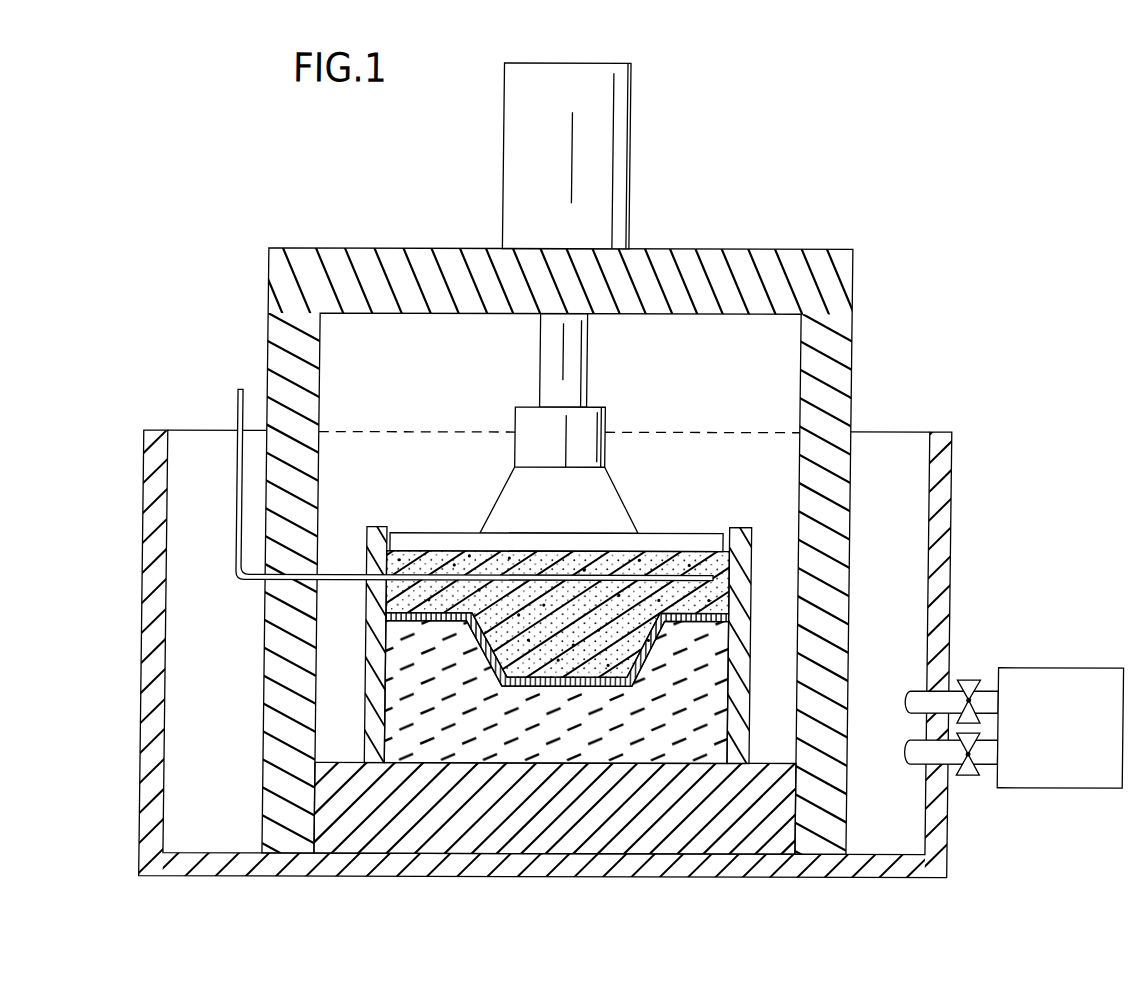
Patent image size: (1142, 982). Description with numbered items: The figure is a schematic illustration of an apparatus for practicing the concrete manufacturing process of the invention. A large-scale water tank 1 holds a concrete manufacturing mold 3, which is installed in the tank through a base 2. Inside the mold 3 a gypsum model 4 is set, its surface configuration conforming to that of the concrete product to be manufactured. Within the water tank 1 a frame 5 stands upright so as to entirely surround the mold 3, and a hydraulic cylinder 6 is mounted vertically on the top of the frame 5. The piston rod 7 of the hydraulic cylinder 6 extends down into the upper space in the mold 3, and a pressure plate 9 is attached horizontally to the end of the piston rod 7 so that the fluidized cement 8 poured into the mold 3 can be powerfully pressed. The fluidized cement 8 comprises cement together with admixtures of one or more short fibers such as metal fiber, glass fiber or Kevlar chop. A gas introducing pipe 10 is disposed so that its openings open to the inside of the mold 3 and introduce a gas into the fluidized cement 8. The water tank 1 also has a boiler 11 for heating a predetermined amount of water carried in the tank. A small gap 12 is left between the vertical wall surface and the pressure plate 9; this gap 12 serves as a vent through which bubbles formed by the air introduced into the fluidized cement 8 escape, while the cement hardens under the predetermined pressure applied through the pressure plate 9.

The water tank 1 is at (141, 586).
The base 2 is at (601, 845).
The concrete manufacturing mold 3 is at (372, 718).
The gypsum model 4 is at (491, 745).
The frame 5 is at (838, 337).
The hydraulic cylinder 6 is at (616, 108).
The piston rod 7 is at (546, 353).
The fluidized cement 8 is at (436, 553).
The pressure plate 9 is at (668, 542).
The gas introducing pipe 10 is at (234, 409).
The boiler 11 is at (1046, 770).
The gap 12 is at (725, 526).